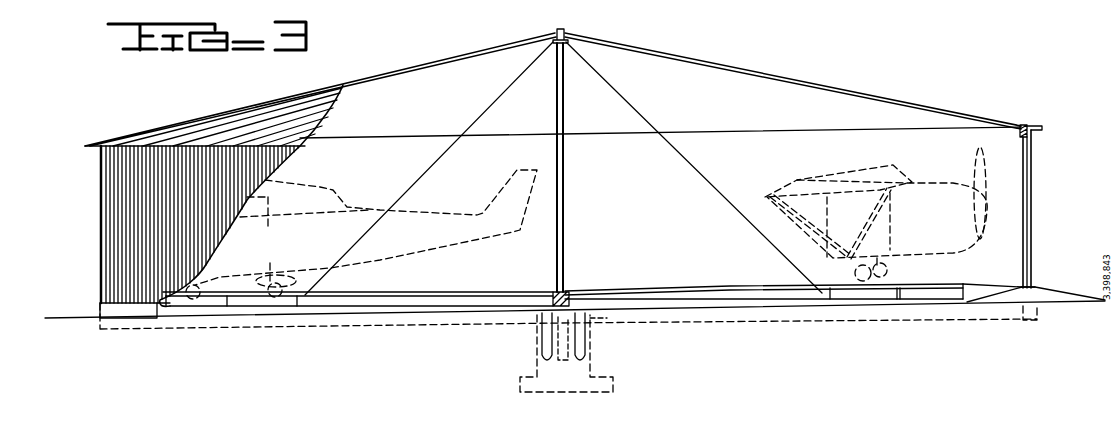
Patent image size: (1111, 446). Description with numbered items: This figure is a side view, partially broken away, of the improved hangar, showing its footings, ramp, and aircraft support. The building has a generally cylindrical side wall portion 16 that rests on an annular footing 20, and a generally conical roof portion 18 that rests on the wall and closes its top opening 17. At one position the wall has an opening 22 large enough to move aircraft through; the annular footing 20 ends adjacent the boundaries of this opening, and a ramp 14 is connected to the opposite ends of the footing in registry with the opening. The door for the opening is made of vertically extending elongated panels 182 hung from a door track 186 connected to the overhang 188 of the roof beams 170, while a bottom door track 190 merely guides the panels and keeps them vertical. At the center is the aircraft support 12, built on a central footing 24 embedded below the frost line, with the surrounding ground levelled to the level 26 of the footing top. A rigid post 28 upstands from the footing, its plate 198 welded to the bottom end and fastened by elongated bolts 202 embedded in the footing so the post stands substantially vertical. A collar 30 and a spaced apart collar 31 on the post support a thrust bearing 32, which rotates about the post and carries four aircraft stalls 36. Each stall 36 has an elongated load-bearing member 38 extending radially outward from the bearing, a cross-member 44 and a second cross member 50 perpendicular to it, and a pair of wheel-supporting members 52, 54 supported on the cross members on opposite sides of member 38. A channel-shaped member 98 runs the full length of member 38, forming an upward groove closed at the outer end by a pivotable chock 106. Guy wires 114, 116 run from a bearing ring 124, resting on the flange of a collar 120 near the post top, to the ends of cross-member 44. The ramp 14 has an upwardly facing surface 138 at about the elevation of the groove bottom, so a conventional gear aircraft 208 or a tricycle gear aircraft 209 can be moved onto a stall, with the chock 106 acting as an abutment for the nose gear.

The aircraft support 12 is at (480, 287).
The ramp 14 is at (1048, 279).
The side wall portion 16 is at (103, 235).
The top opening 17 is at (730, 130).
The roof portion 18 is at (448, 58).
The annular footing 20 is at (132, 308).
The opening 22 is at (1026, 160).
The central footing 24 is at (593, 355).
The ground level 26 is at (320, 303).
The rigid post 28 is at (568, 161).
The collar 30 is at (556, 299).
The collar 31 is at (553, 290).
The thrust bearing 32 is at (567, 291).
The aircraft stall 36 is at (400, 291).
The load-bearing member 38 is at (365, 302).
The cross-member 44 is at (297, 300).
The second cross member 50 is at (227, 307).
The wheel-supporting member 52 is at (920, 293).
The wheel-supporting member 54 is at (197, 304).
The channel-shaped member 98 is at (440, 293).
The chock 106 is at (160, 294).
The guy wire 114 is at (432, 167).
The guy wire 116 is at (709, 153).
The collar 120 is at (572, 43).
The bearing ring 124 is at (540, 43).
The upwardly facing surface 138 is at (1003, 280).
The roof beam 170 is at (720, 62).
The door panel 182 is at (1032, 197).
The door track 186 is at (1038, 130).
The overhang 188 is at (1022, 125).
The bottom door track 190 is at (1030, 278).
The plate 198 is at (590, 313).
The elongated bolt 202 is at (542, 350).
The conventional gear aircraft 208 is at (797, 180).
The tricycle gear aircraft 209 is at (302, 178).